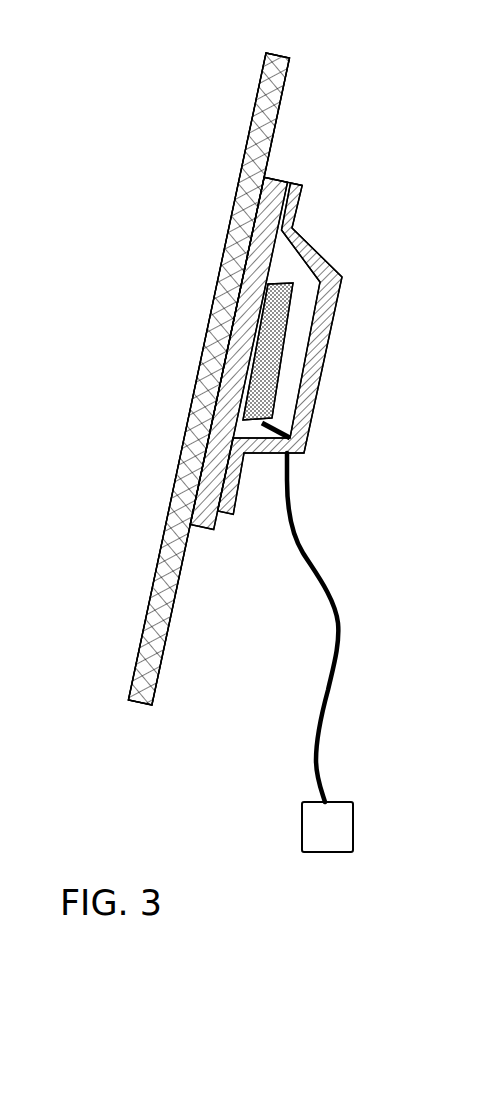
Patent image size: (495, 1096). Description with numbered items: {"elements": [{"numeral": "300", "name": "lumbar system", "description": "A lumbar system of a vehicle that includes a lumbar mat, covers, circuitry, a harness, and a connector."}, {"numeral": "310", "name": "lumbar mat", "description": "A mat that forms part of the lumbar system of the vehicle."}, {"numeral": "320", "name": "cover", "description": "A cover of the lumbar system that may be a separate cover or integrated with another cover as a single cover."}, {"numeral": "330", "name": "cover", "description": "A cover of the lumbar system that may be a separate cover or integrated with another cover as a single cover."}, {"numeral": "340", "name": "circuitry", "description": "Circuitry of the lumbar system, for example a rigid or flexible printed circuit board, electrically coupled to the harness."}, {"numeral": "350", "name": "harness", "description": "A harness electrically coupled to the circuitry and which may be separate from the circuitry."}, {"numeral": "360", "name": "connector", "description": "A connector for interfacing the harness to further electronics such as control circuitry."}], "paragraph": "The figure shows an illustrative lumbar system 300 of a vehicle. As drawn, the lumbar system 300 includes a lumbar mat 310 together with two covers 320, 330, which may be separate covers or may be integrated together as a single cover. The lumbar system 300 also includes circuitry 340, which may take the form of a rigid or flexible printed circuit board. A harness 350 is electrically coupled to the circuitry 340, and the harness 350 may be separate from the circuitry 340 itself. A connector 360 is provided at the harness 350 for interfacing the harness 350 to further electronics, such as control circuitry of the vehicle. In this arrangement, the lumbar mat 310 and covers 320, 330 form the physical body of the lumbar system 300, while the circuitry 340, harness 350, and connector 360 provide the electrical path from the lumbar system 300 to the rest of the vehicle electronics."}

The electronic device 300 is at (117, 53).
The display panel 310 is at (142, 632).
The support layer 320 is at (200, 527).
The bracket 330 is at (302, 180).
The sensor module 340 is at (277, 357).
The cable 350 is at (332, 690).
The connector 360 is at (355, 818).